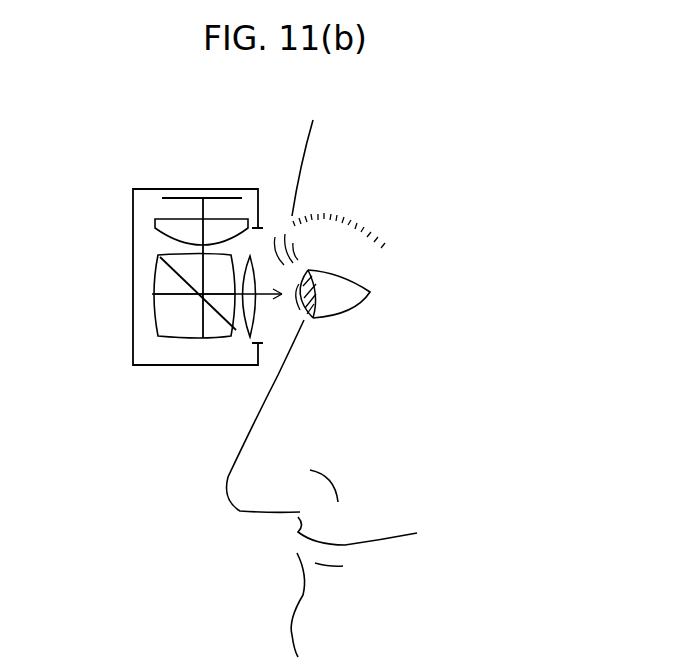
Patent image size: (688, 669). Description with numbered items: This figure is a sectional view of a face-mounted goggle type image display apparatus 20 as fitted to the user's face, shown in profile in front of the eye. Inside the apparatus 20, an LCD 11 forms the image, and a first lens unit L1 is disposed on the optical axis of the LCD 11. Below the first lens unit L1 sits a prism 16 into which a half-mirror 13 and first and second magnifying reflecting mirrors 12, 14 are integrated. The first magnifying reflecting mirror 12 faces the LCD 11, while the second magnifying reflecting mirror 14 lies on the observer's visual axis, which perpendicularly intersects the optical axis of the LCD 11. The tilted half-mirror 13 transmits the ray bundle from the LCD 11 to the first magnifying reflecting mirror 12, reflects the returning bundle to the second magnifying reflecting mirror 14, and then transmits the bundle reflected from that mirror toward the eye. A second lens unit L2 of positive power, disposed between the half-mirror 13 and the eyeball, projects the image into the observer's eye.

The face-mounted goggle type image display apparatus 20 is at (130, 228).
The LCD 11 is at (226, 198).
The first lens unit L1 is at (159, 218).
The first magnifying reflecting mirror 12 is at (158, 334).
The half-mirror 13 is at (232, 327).
The prism 16 is at (155, 275).
The second magnifying reflecting mirror 14 is at (152, 318).
The second lens unit L2 is at (258, 313).